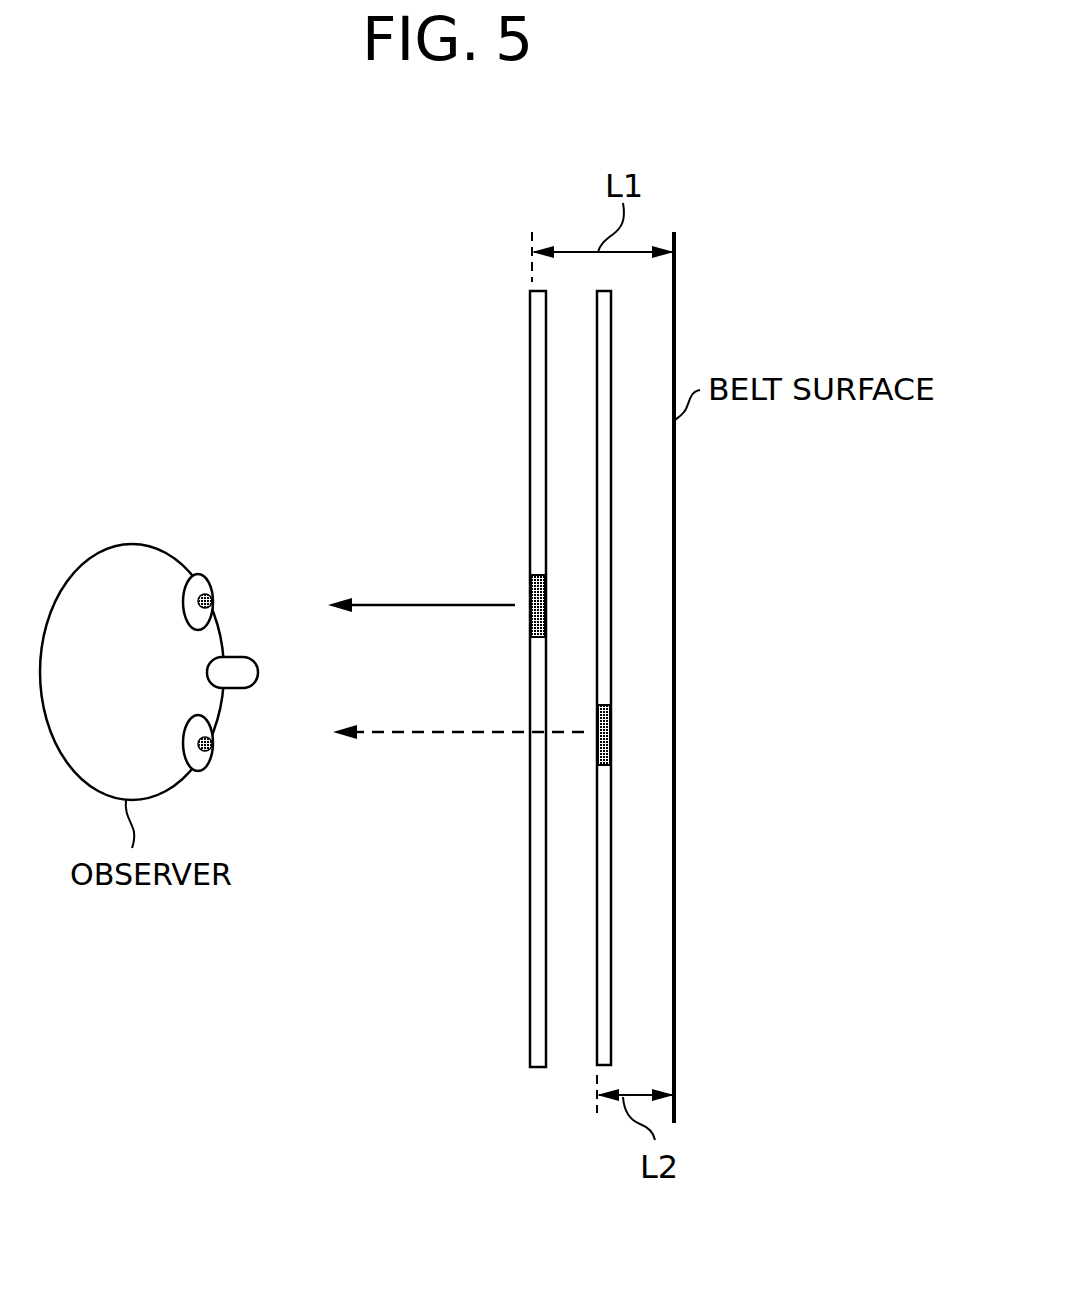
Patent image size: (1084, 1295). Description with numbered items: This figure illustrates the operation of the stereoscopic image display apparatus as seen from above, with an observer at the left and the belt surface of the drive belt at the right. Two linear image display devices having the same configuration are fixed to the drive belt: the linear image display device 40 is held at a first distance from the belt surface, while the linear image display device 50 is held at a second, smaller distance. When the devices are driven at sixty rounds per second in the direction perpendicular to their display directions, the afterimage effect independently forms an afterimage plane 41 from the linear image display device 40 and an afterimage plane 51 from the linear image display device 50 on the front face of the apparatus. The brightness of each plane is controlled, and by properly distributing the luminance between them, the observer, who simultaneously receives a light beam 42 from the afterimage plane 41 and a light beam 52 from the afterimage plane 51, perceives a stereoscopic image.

The linear image display device 40 is at (531, 588).
The afterimage plane 41 is at (530, 423).
The light beam 42 is at (402, 605).
The linear image display device 50 is at (612, 735).
The afterimage plane 51 is at (612, 420).
The light beam 52 is at (402, 732).